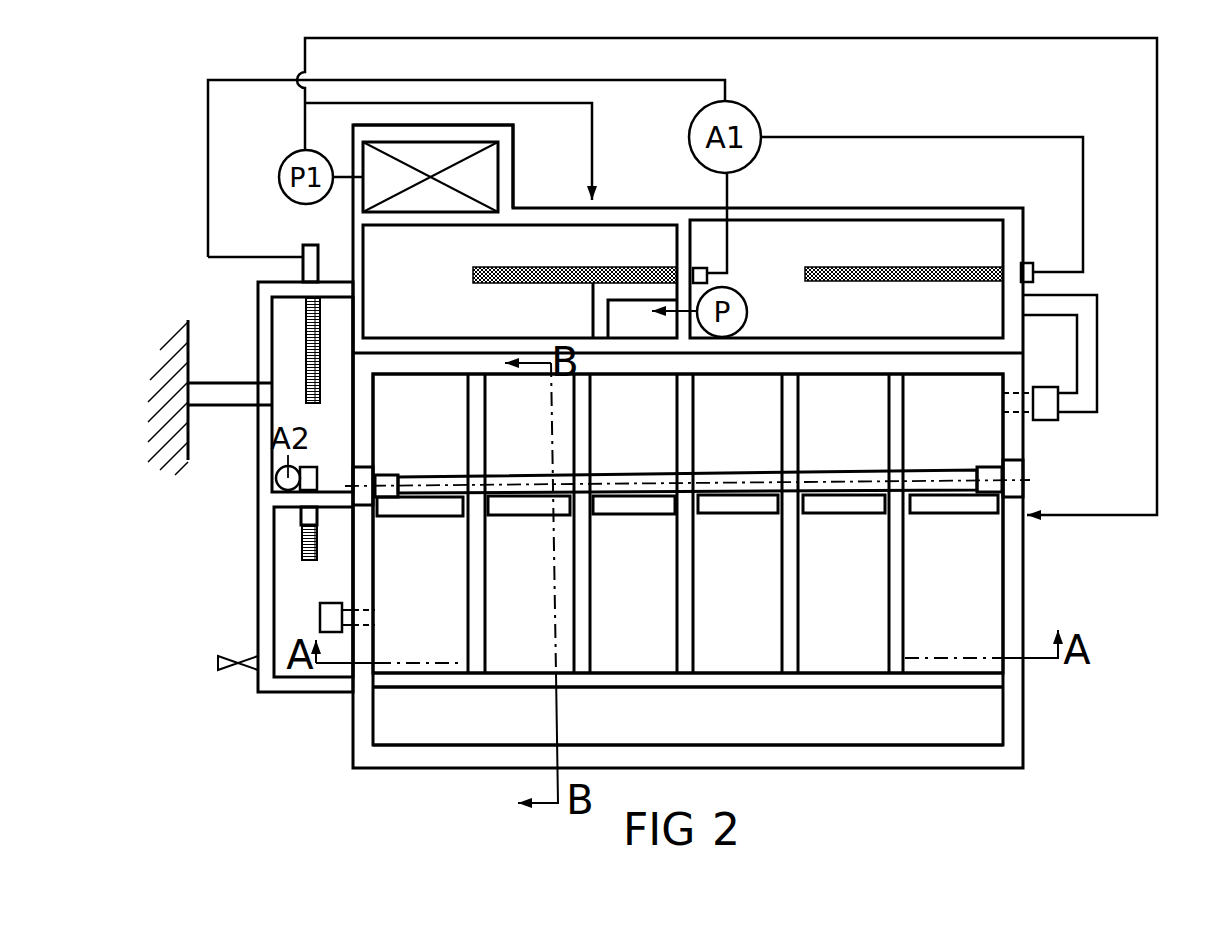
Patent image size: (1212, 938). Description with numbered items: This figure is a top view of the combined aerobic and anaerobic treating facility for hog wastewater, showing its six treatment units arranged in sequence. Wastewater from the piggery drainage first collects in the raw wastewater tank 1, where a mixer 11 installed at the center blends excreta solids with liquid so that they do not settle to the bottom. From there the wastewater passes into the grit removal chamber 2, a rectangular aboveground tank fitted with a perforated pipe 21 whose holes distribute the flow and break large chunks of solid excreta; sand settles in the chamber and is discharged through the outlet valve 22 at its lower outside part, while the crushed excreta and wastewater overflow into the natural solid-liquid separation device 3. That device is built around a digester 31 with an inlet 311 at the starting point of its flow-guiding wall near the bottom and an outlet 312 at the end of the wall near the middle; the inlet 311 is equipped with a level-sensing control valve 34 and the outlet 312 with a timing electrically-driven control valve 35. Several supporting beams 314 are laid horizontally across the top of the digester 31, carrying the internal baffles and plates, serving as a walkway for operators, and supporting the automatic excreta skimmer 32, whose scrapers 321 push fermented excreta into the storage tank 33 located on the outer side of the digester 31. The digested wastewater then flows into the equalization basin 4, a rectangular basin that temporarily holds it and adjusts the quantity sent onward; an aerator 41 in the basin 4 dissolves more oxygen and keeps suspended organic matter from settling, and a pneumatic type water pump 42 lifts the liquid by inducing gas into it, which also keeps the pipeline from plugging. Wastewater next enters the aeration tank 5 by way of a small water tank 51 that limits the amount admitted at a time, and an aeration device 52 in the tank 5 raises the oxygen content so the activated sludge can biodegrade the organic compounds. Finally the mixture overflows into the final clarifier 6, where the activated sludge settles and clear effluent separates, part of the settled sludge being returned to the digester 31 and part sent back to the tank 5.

The raw wastewater tank 1 is at (243, 328).
The mixer 11 is at (303, 340).
The grit removal chamber 2 is at (226, 604).
The perforated pipe 21 is at (302, 548).
The outlet valve 22 is at (218, 664).
The natural solid-liquid separation device 3 is at (328, 771).
The digester 31 is at (508, 648).
The inlet 311 is at (370, 618).
The outlet 312 is at (1010, 400).
The supporting beam 314 is at (477, 452).
The automatic excreta skimmer 32 is at (407, 476).
The scraper 321 is at (425, 507).
The storage tank 33 is at (447, 738).
The level-sensing control valve 34 is at (320, 622).
The timing electrically-driven control valve 35 is at (1043, 402).
The equalization basin 4 is at (944, 204).
The aerator 41 is at (883, 268).
The pneumatic type water pump 42 is at (735, 300).
The aeration tank 5 is at (636, 203).
The small water tank 51 is at (628, 320).
The aeration device 52 is at (500, 290).
The final clarifier 6 is at (518, 181).